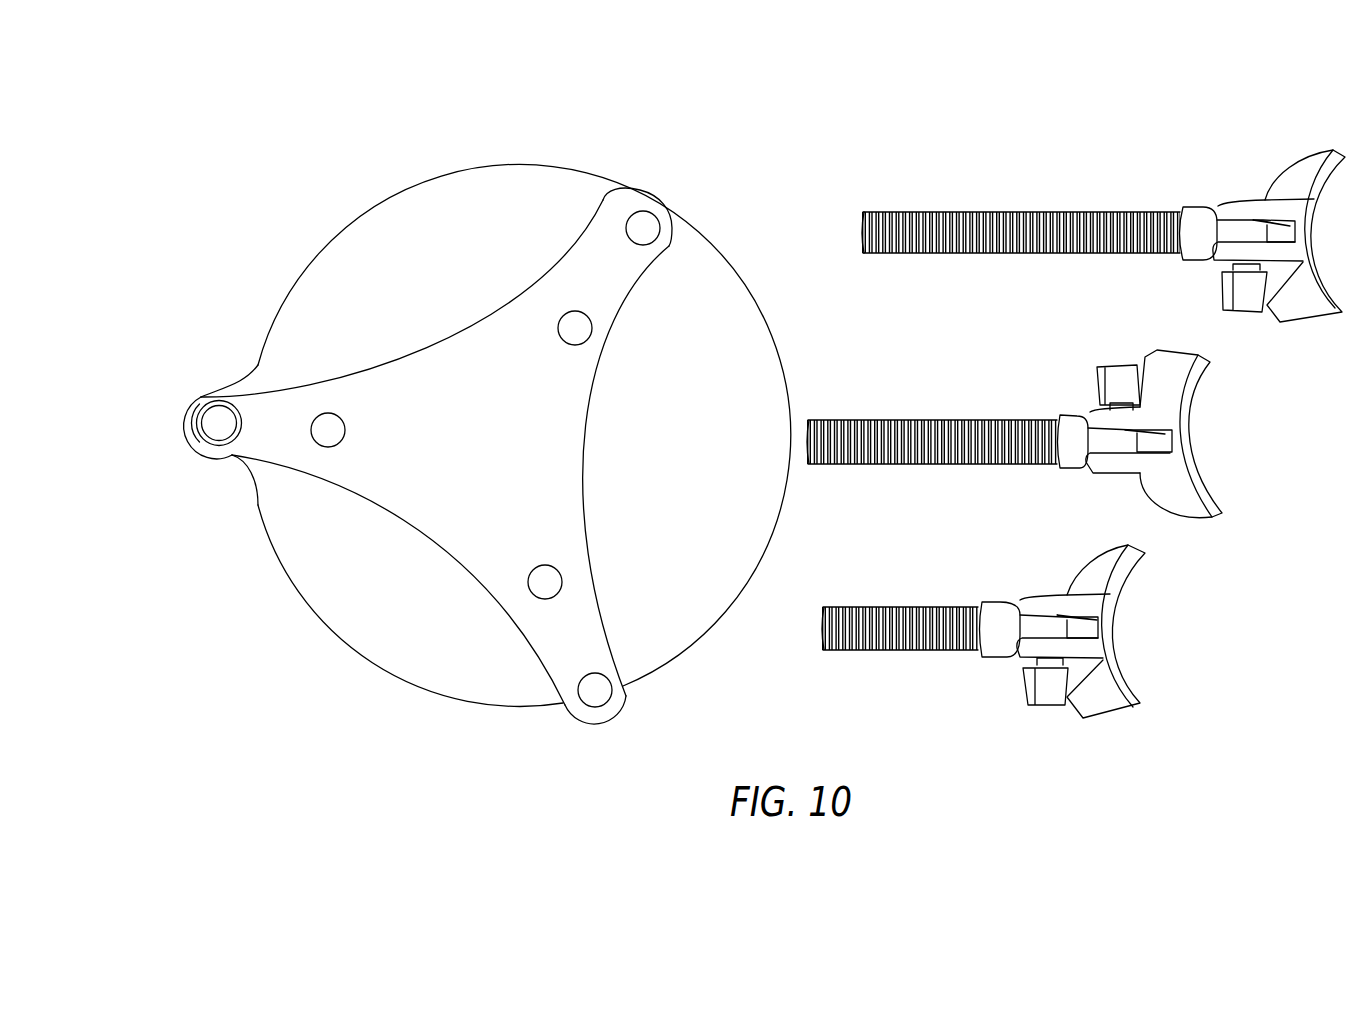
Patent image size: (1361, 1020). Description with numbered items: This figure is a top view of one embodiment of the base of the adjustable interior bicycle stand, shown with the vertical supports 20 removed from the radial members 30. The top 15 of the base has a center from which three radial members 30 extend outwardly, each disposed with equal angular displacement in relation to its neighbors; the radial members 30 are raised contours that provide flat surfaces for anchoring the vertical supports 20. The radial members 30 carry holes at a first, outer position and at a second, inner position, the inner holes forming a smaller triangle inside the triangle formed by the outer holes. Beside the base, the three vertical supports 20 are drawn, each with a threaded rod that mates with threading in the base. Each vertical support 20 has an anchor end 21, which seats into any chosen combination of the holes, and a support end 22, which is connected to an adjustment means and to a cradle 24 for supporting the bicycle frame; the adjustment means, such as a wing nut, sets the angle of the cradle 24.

The top 15 is at (392, 309).
The radial member 30 is at (607, 280).
The vertical support 20 is at (1003, 212).
The anchor end 21 is at (862, 212).
The support end 22 is at (1178, 215).
The cradle 24 is at (1300, 178).